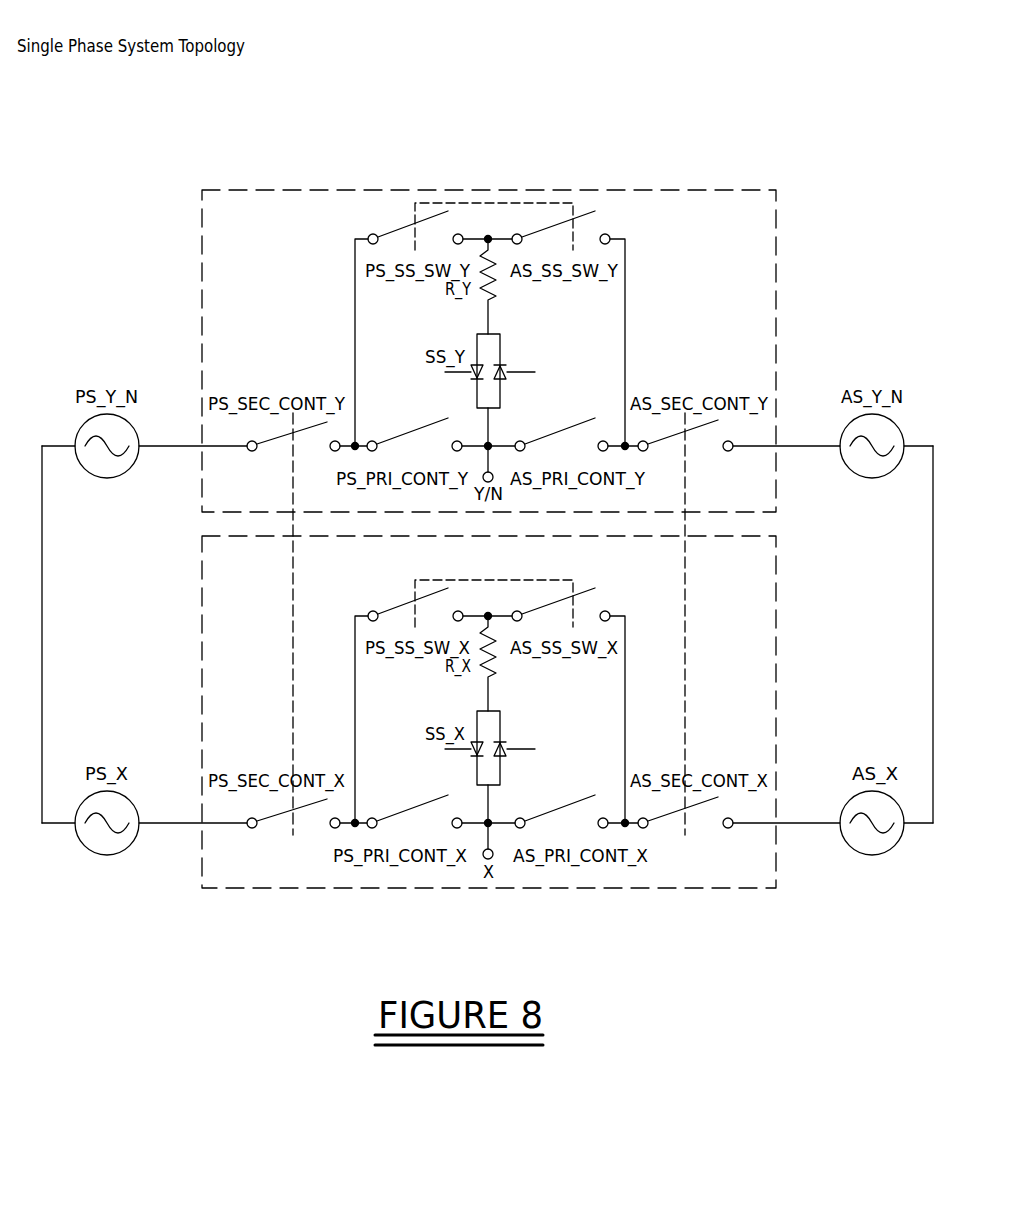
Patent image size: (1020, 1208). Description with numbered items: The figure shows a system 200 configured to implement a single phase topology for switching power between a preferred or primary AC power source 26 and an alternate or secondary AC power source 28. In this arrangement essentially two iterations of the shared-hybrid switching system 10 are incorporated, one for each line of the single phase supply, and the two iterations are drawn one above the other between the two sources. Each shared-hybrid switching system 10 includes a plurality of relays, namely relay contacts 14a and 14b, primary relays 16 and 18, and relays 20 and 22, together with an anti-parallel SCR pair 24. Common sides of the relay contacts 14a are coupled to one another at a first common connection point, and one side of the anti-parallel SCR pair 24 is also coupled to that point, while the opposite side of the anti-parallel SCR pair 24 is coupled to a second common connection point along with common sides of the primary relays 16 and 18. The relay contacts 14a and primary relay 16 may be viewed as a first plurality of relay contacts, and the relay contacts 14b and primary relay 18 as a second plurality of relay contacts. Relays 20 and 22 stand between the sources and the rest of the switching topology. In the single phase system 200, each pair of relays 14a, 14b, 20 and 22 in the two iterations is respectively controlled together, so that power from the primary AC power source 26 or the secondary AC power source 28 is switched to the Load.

The system 200 is at (136, 203).
The shared-hybrid switching system 10 is at (202, 318).
The relay contacts 14a is at (402, 228).
The relay contacts 14b is at (583, 236).
The primary relay 16 is at (412, 432).
The primary relay 18 is at (572, 432).
The relay 20 is at (288, 440).
The relay 22 is at (688, 433).
The anti-parallel SCR pair 24 is at (509, 352).
The primary AC power source 26 is at (107, 478).
The secondary AC power source 28 is at (872, 478).